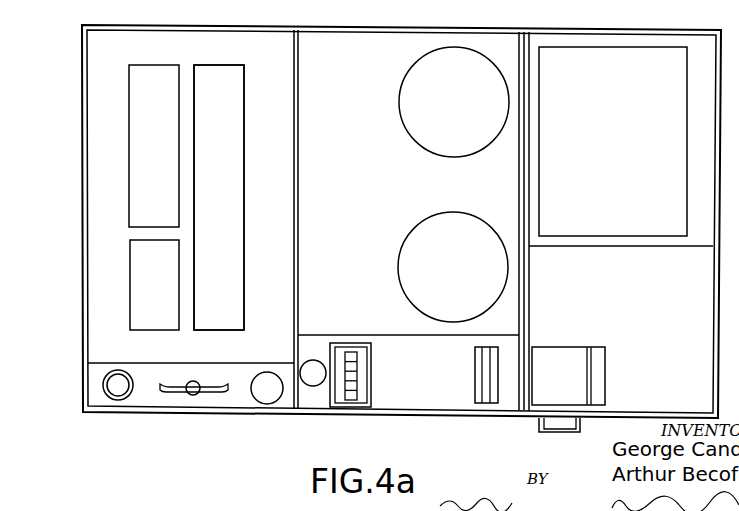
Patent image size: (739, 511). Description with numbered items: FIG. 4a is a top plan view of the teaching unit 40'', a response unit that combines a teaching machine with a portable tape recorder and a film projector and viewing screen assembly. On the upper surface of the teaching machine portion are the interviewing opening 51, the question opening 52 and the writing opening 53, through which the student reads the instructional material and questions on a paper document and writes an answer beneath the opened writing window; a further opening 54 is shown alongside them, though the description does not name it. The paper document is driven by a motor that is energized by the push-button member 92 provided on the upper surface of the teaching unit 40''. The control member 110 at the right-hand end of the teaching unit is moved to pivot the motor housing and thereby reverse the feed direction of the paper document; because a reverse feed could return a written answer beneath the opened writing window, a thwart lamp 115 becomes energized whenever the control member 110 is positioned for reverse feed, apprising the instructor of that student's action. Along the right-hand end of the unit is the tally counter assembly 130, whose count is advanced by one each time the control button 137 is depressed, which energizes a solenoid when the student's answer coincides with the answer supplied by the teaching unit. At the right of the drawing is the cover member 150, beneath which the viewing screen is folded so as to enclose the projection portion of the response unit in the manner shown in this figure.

The teaching unit 40'' is at (374, 228).
The interviewing opening 51 is at (136, 148).
The question opening 52 is at (238, 72).
The writing opening 53 is at (141, 268).
The panel 54 is at (238, 278).
The push-button member 92 is at (118, 392).
The control member 110 is at (192, 395).
The thwart lamp 115 is at (263, 394).
The tally counter assembly 130 is at (356, 334).
The control button 137 is at (313, 386).
The cover member 150 is at (627, 156).